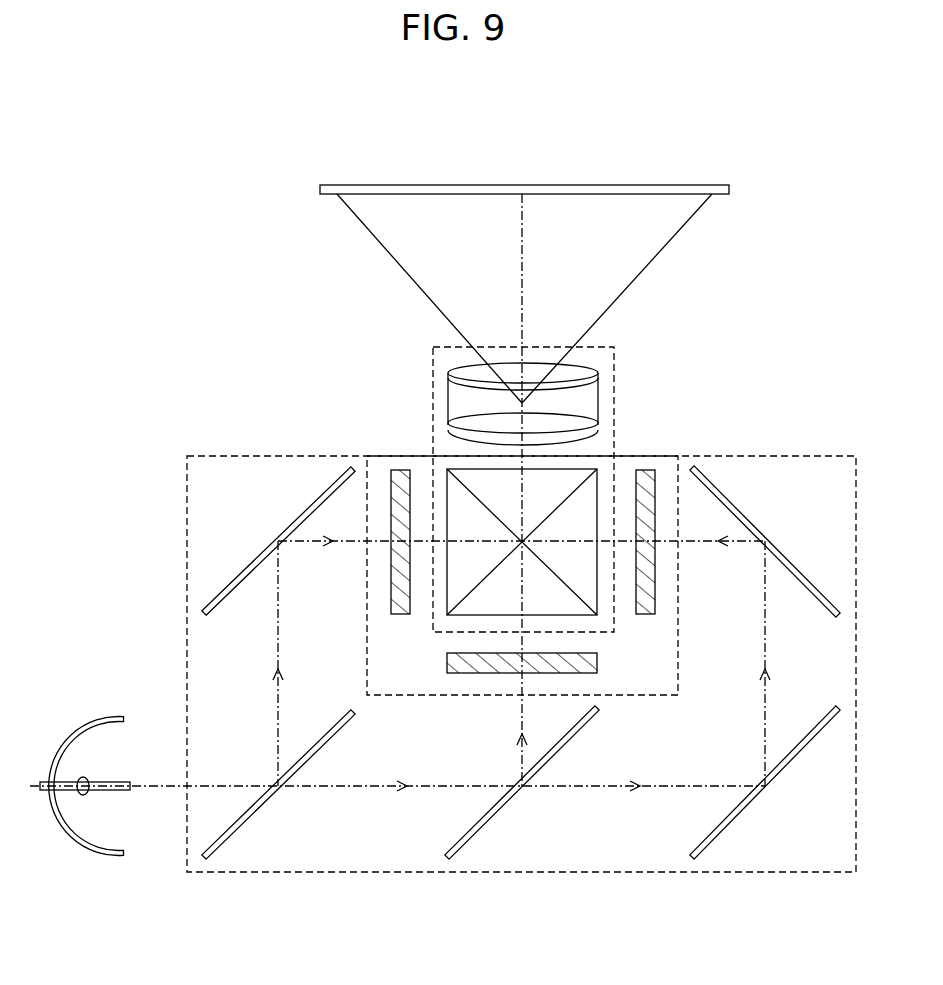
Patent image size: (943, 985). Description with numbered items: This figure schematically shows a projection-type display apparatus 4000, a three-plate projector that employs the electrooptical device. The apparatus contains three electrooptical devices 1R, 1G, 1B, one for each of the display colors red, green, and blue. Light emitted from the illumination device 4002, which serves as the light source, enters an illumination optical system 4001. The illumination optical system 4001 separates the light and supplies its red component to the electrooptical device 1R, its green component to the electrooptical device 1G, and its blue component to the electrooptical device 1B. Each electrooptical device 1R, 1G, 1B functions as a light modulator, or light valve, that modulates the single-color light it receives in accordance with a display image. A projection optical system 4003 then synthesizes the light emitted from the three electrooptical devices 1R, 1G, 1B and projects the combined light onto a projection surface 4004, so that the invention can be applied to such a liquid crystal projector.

The projection-type display apparatus 4000 is at (229, 398).
The illumination optical system 4001 is at (816, 455).
The illumination device 4002 is at (107, 718).
The projection optical system 4003 is at (618, 376).
The projection surface 4004 is at (609, 185).
The electrooptical device 1R is at (402, 470).
The electrooptical device 1G is at (597, 663).
The electrooptical device 1B is at (647, 470).